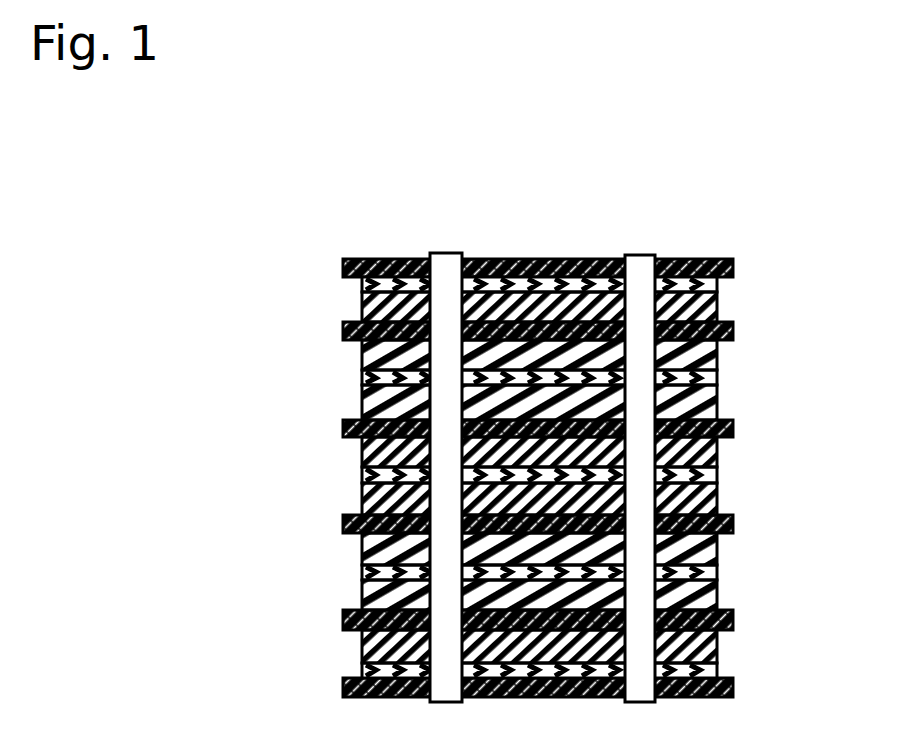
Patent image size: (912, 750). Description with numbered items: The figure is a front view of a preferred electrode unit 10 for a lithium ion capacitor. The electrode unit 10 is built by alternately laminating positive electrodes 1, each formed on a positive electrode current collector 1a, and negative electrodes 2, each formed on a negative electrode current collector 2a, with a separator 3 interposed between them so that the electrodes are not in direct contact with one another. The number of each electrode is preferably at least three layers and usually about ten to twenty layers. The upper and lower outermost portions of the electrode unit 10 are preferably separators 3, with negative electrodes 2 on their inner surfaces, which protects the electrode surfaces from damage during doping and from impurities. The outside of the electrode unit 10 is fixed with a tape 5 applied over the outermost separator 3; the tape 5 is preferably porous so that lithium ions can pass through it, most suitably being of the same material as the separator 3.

The positive electrode 1 is at (720, 355).
The positive electrode current collector 1a is at (718, 378).
The negative electrode 2 is at (720, 305).
The negative electrode current collector 2a is at (718, 284).
The separator 3 is at (735, 266).
The tape 5 is at (633, 257).
The electrode unit 10 is at (605, 410).